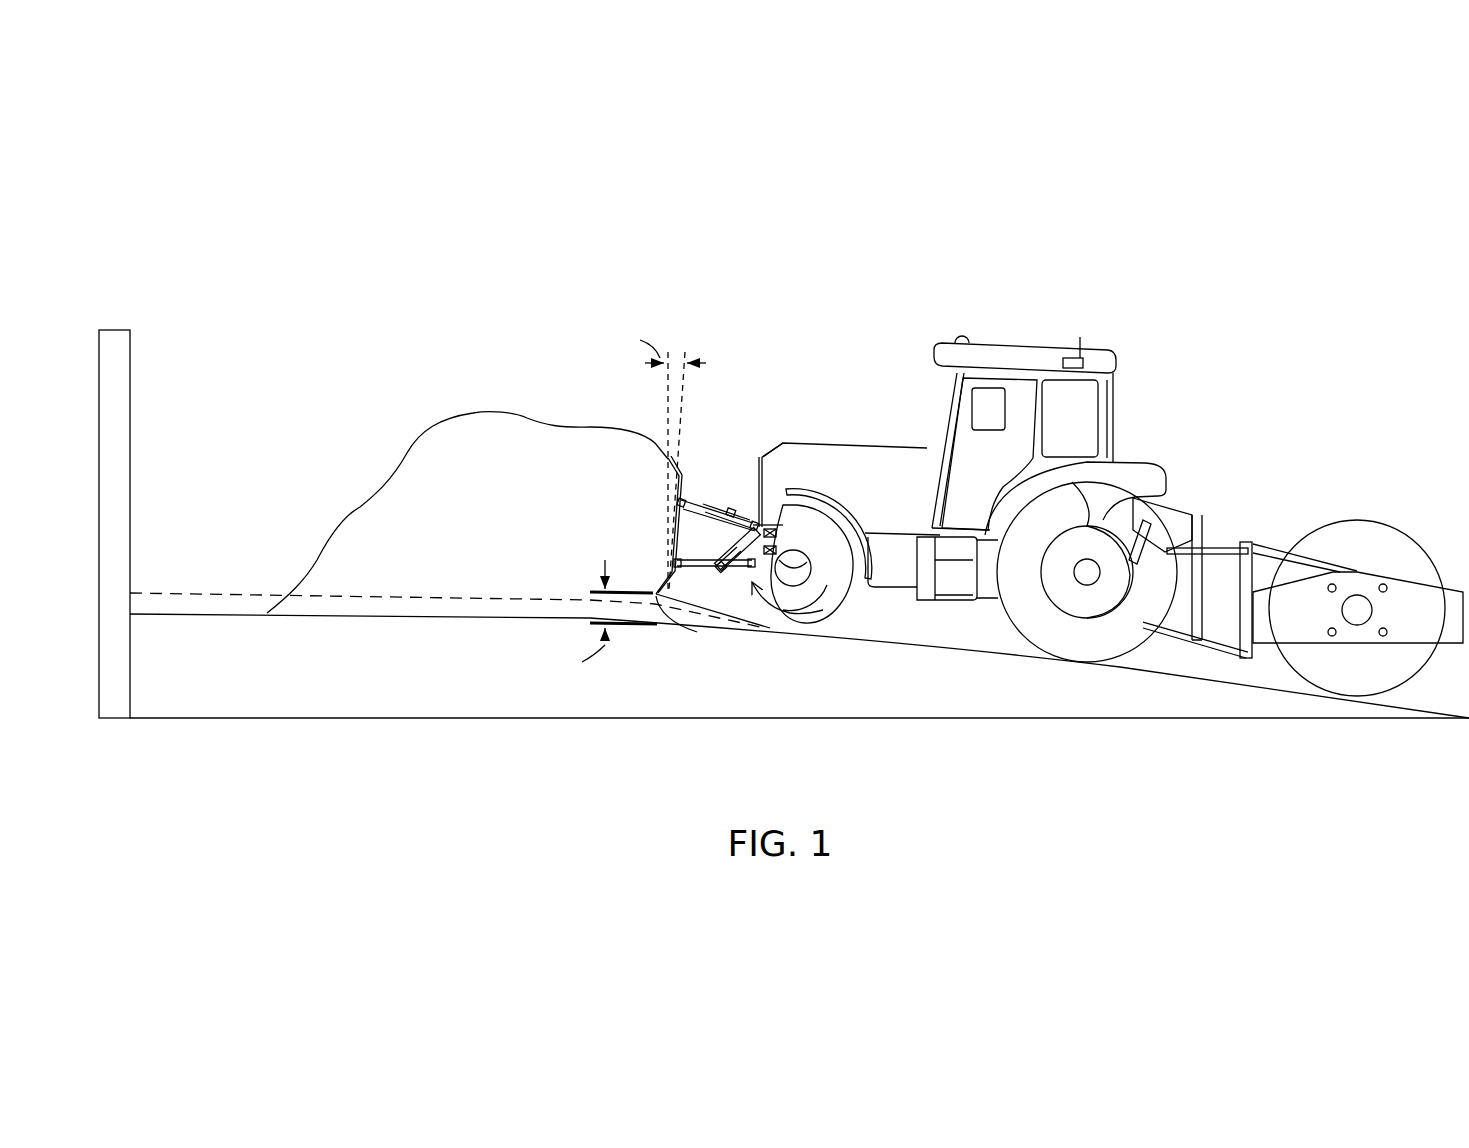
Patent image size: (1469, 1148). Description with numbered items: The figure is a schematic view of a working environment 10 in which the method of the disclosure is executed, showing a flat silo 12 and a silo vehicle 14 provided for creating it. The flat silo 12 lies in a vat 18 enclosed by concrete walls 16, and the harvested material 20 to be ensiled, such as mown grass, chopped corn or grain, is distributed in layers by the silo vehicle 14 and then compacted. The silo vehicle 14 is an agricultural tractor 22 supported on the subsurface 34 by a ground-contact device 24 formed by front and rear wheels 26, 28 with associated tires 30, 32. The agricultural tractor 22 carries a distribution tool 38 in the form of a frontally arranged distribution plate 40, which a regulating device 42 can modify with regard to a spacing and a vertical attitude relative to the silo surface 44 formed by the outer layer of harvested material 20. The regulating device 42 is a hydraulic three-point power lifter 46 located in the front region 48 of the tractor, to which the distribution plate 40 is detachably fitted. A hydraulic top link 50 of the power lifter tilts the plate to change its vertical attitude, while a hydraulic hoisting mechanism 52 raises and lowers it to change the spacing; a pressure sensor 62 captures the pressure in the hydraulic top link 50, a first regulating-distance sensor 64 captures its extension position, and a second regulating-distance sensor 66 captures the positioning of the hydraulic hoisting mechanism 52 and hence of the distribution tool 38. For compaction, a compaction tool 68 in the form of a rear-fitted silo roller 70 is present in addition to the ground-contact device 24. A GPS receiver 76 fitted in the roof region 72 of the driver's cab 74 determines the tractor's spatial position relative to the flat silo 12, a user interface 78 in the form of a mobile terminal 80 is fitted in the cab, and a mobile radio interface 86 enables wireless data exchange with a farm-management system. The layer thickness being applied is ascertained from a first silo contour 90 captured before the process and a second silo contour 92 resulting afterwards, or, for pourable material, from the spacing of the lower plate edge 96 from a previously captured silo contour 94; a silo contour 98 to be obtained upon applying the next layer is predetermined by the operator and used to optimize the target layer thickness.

The working environment 10 is at (370, 200).
The flat silo 12 is at (275, 443).
The silo vehicle 14 is at (1165, 275).
The concrete walls 16 is at (112, 497).
The vat 18 is at (285, 718).
The harvested material 20 is at (492, 435).
The agricultural tractor 22 is at (862, 447).
The ground-contact device 24 is at (810, 620).
The front wheel 26 is at (768, 607).
The rear wheel 28 is at (1090, 640).
The tire 30 is at (830, 618).
The tire 32 is at (1128, 658).
The subsurface 34 is at (378, 603).
The distribution tool 38 is at (660, 536).
The distribution plate 40 is at (668, 470).
The regulating device 42 is at (748, 500).
The silo surface 44 is at (905, 635).
The hydraulic three-point power lifter 46 is at (825, 611).
The front region 48 is at (740, 345).
The hydraulic top link 50 is at (705, 502).
The hydraulic hoisting mechanism 52 is at (678, 520).
The pressure sensor 62 is at (731, 512).
The first regulating-distance sensor 64 is at (782, 532).
The second regulating-distance sensor 66 is at (800, 568).
The compaction tool 68 is at (1333, 465).
The silo roller 70 is at (1380, 548).
The roof region 72 is at (1010, 350).
The driver's cab 74 is at (1100, 415).
The GPS receiver 76 is at (962, 337).
The user interface 78 is at (1015, 410).
The mobile terminal 80 is at (988, 415).
The mobile radio interface 86 is at (1080, 340).
The first silo contour 90 is at (185, 614).
The second silo contour 92 is at (1385, 718).
The silo contour 94 is at (625, 645).
The lower plate edge 96 is at (676, 622).
The silo contour to be obtained 98 is at (213, 593).